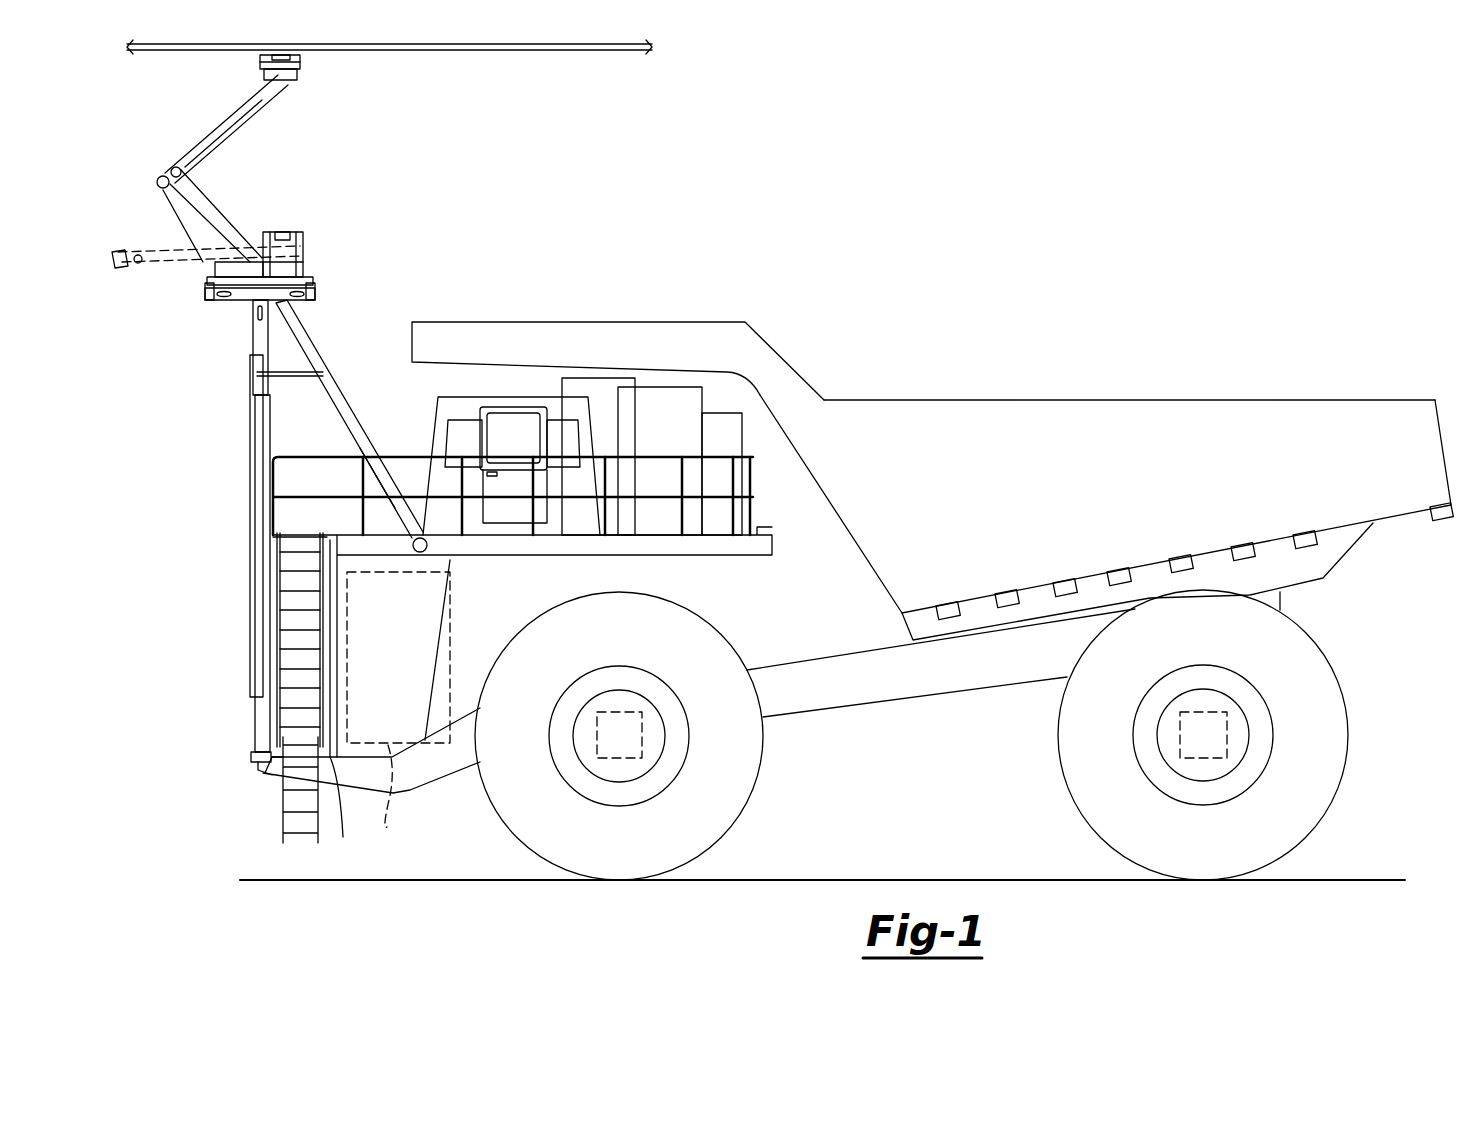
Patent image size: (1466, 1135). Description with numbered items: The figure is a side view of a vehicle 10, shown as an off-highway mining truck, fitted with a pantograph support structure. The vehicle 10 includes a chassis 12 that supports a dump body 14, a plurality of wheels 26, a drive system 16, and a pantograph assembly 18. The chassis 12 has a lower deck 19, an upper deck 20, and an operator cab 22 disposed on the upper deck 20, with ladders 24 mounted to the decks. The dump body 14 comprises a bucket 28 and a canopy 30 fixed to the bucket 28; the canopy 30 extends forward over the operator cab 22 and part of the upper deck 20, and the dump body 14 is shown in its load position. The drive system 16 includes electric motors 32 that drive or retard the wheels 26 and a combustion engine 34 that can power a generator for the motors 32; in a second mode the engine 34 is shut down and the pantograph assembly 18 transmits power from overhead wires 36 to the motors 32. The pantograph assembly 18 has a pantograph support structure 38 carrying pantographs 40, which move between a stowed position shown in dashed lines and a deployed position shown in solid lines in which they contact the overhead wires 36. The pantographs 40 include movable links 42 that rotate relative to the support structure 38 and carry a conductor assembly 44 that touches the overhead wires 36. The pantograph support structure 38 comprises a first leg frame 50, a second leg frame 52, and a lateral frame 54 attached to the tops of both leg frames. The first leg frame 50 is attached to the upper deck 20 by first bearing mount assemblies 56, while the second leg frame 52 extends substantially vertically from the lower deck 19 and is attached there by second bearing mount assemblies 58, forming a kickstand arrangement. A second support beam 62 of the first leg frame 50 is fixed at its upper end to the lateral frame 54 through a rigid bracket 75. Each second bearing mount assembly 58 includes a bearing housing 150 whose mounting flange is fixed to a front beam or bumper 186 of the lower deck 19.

The vehicle 10 is at (809, 496).
The chassis 12 is at (437, 793).
The dump body 14 is at (1155, 400).
The drive system 16 is at (345, 640).
The pantograph assembly 18 is at (271, 177).
The lower deck 19 is at (341, 812).
The upper deck 20 is at (343, 527).
The operator cab 22 is at (500, 400).
The ladders 24 is at (303, 572).
The wheels 26 is at (723, 808).
The bucket 28 is at (958, 416).
The canopy 30 is at (446, 330).
The electric motors 32 is at (643, 733).
The combustion engine 34 is at (391, 800).
The overhead wires 36 is at (540, 52).
The pantograph support structure 38 is at (245, 402).
The pantographs 40 is at (198, 117).
The movable links 42 is at (220, 217).
The conductor assembly 44 is at (300, 70).
The first leg frame 50 is at (350, 388).
The second leg frame 52 is at (245, 462).
The lateral frame 54 is at (316, 280).
The first bearing mount assemblies 56 is at (428, 560).
The second bearing mount assemblies 58 is at (248, 758).
The second support beam 62 is at (393, 487).
The rigid bracket 75 is at (240, 302).
The bearing housing 150 is at (257, 770).
The front beam or bumper 186 is at (277, 770).